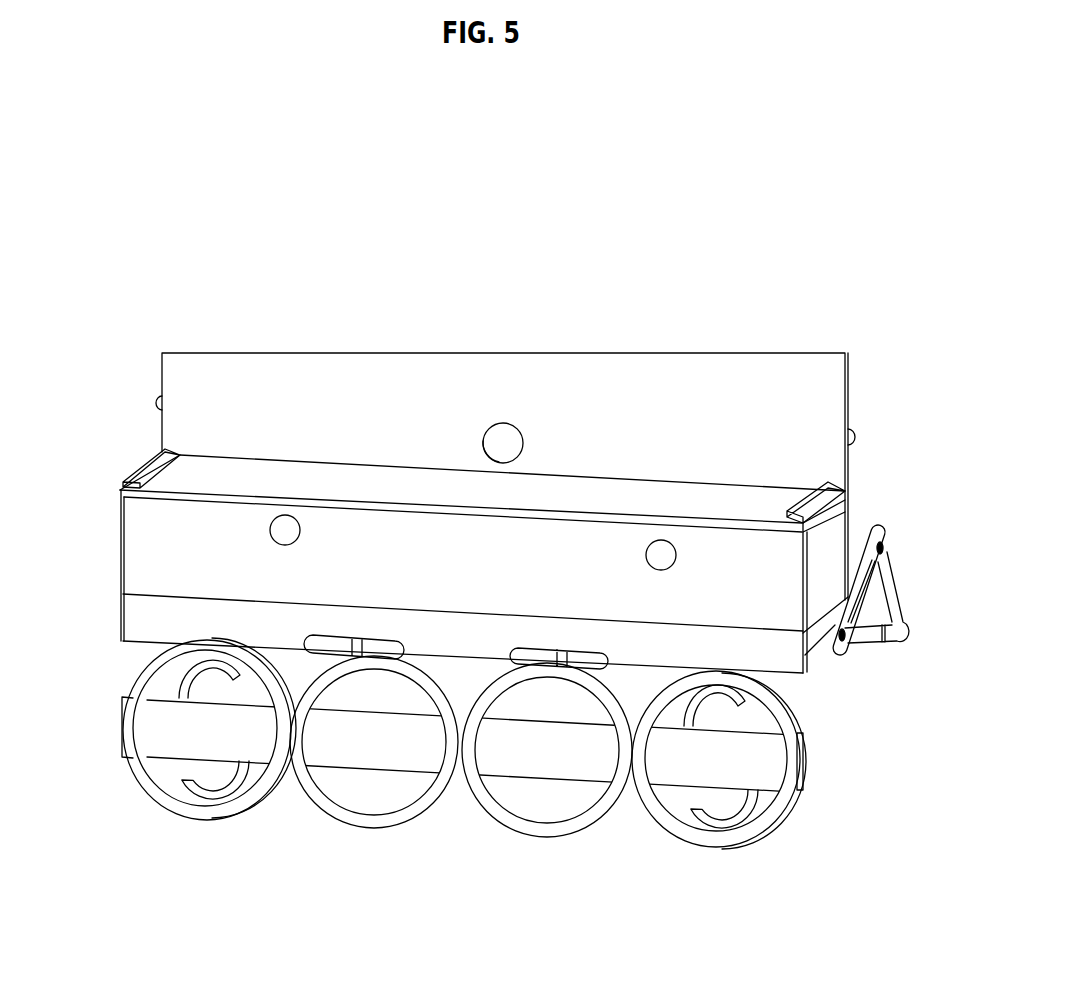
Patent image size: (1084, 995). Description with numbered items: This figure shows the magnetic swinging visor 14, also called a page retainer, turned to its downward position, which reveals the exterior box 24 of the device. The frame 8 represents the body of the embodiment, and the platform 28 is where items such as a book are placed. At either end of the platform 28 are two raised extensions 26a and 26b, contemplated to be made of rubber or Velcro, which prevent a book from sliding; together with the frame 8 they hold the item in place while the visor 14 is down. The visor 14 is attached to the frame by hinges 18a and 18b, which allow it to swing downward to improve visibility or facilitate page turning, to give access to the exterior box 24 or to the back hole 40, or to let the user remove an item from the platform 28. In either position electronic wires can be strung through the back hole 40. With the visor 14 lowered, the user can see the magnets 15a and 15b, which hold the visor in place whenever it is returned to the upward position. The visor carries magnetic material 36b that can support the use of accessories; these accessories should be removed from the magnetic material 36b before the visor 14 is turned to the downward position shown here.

The frame 8 is at (858, 378).
The back hole 40 is at (533, 443).
The platform 28 is at (206, 481).
The raised extension 26a is at (150, 470).
The raised extension 26b is at (840, 494).
The exterior box 24 is at (145, 567).
The magnet 15a is at (290, 531).
The magnet 15b is at (666, 555).
The hinge 18a is at (330, 641).
The hinge 18b is at (588, 657).
The magnetic swinging visor 14 is at (787, 737).
The magnetic material 36b is at (745, 763).